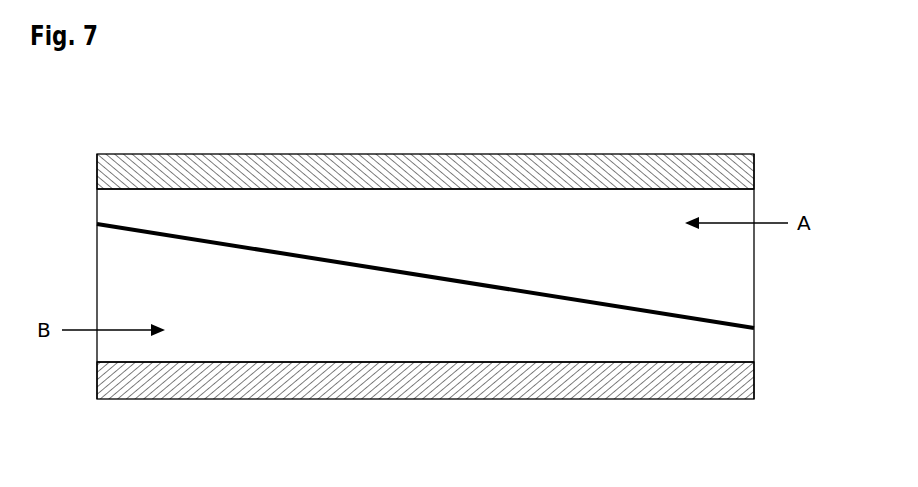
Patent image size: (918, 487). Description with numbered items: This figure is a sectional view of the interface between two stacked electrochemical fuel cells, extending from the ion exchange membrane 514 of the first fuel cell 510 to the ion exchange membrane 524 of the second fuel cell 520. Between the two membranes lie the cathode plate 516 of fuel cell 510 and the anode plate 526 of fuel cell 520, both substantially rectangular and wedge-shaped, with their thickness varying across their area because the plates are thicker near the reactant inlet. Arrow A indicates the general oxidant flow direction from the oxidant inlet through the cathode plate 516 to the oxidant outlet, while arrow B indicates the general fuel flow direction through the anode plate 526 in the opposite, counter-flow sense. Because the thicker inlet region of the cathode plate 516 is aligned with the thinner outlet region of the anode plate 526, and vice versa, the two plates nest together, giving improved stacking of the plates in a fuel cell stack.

The fuel cell 510 is at (395, 276).
The ion exchange membrane 514 is at (375, 171).
The cathode plate 516 is at (478, 222).
The fuel cell 520 is at (455, 298).
The ion exchange membrane 524 is at (377, 380).
The anode plate 526 is at (478, 328).